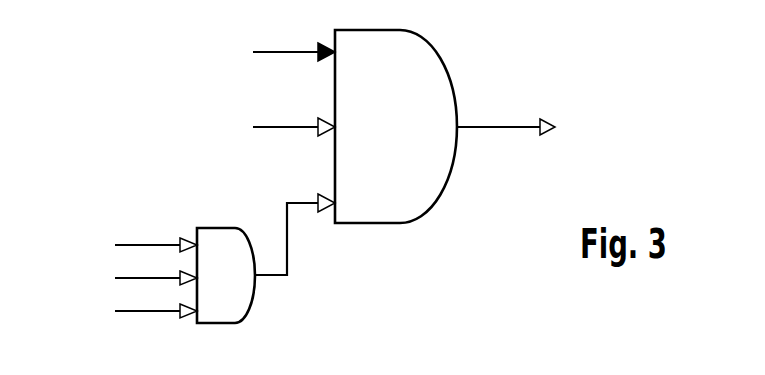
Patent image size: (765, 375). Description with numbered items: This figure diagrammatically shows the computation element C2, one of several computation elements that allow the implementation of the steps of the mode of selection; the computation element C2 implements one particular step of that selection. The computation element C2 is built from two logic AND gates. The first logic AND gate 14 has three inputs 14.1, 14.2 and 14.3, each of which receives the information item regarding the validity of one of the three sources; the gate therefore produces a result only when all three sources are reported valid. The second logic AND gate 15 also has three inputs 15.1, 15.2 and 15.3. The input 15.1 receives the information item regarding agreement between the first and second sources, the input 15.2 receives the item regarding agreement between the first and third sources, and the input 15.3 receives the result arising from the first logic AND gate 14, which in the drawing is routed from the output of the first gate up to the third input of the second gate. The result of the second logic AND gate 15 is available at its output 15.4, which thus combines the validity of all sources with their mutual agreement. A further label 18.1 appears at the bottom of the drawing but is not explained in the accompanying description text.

The first logic AND gate 14 is at (250, 305).
The input of first logic AND gate 14.1 is at (147, 244).
The input of first logic AND gate 14.2 is at (145, 277).
The input of first logic AND gate 14.3 is at (152, 312).
The second logic AND gate 15 is at (428, 211).
The input of second logic AND gate 15.1 is at (283, 60).
The input of second logic AND gate 15.2 is at (283, 133).
The input of second logic AND gate 15.3 is at (289, 263).
The output of second logic AND gate 15.4 is at (485, 121).
The signal line 18.1 is at (291, 366).
The computation element C2 is at (170, 140).